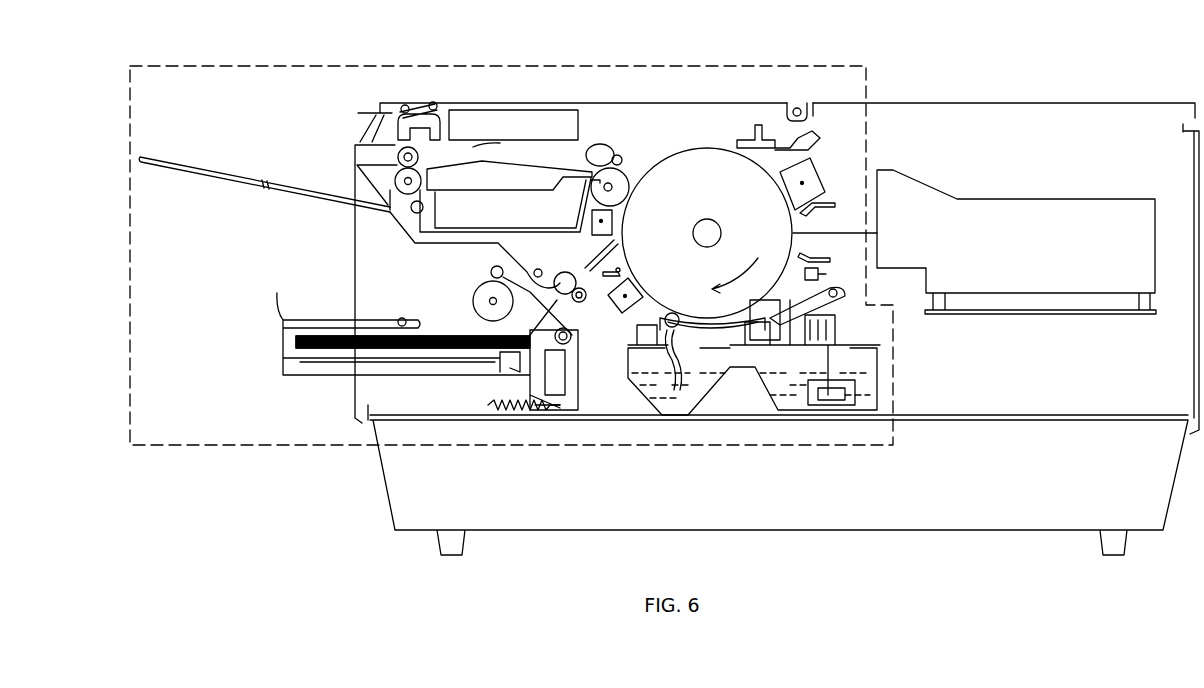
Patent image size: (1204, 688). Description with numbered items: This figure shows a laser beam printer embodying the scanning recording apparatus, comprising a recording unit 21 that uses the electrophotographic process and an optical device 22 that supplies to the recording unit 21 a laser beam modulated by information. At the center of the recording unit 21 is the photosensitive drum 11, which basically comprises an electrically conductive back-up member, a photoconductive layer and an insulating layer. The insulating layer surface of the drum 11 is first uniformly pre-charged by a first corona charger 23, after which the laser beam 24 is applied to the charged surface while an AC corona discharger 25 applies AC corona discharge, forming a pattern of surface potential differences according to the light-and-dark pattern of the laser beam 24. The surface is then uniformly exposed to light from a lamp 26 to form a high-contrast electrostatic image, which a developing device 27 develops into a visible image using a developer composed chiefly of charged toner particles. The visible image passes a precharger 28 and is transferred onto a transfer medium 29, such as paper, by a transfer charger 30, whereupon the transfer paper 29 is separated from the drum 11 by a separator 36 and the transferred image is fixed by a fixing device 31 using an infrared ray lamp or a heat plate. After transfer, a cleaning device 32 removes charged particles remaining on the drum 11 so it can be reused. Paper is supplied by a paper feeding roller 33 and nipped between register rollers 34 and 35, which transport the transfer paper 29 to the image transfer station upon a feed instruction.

The recording unit 21 is at (768, 66).
The optical device 22 is at (1022, 199).
The photosensitive drum 11 is at (682, 158).
The cleaning device 32 is at (744, 142).
The first corona charger 23 is at (812, 170).
The laser beam 24 is at (852, 228).
The AC corona discharger 25 is at (815, 222).
The lamp 26 is at (830, 270).
The developing device 27 is at (715, 357).
The precharger 28 is at (638, 291).
The transfer medium 29 is at (482, 337).
The transfer charger 30 is at (622, 218).
The fixing device 31 is at (520, 172).
The paper feeding roller 33 is at (481, 297).
The register roller 34 is at (567, 274).
The register roller 35 is at (582, 302).
The separator 36 is at (620, 180).